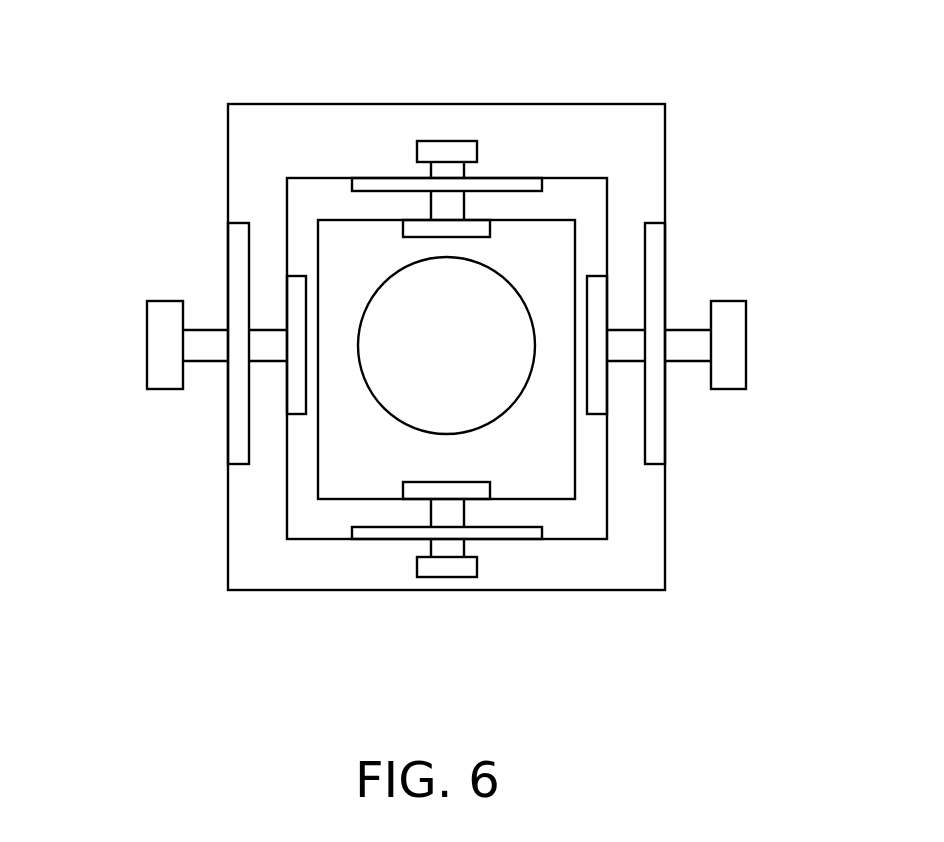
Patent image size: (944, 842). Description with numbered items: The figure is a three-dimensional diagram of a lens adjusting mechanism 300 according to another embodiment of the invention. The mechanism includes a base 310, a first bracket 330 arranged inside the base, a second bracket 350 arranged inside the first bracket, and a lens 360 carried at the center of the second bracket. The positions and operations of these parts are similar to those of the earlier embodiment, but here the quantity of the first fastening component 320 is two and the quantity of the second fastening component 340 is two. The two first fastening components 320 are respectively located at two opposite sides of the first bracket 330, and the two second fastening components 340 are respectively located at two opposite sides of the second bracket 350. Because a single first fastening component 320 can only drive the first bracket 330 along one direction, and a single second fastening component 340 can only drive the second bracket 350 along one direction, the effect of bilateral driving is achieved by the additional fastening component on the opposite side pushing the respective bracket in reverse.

The lens adjusting mechanism 300 is at (447, 350).
The base 310 is at (650, 140).
The first fastening component 320 is at (158, 339).
The first bracket 330 is at (595, 203).
The second fastening component 340 is at (453, 147).
The second bracket 350 is at (547, 254).
The lens 360 is at (486, 393).